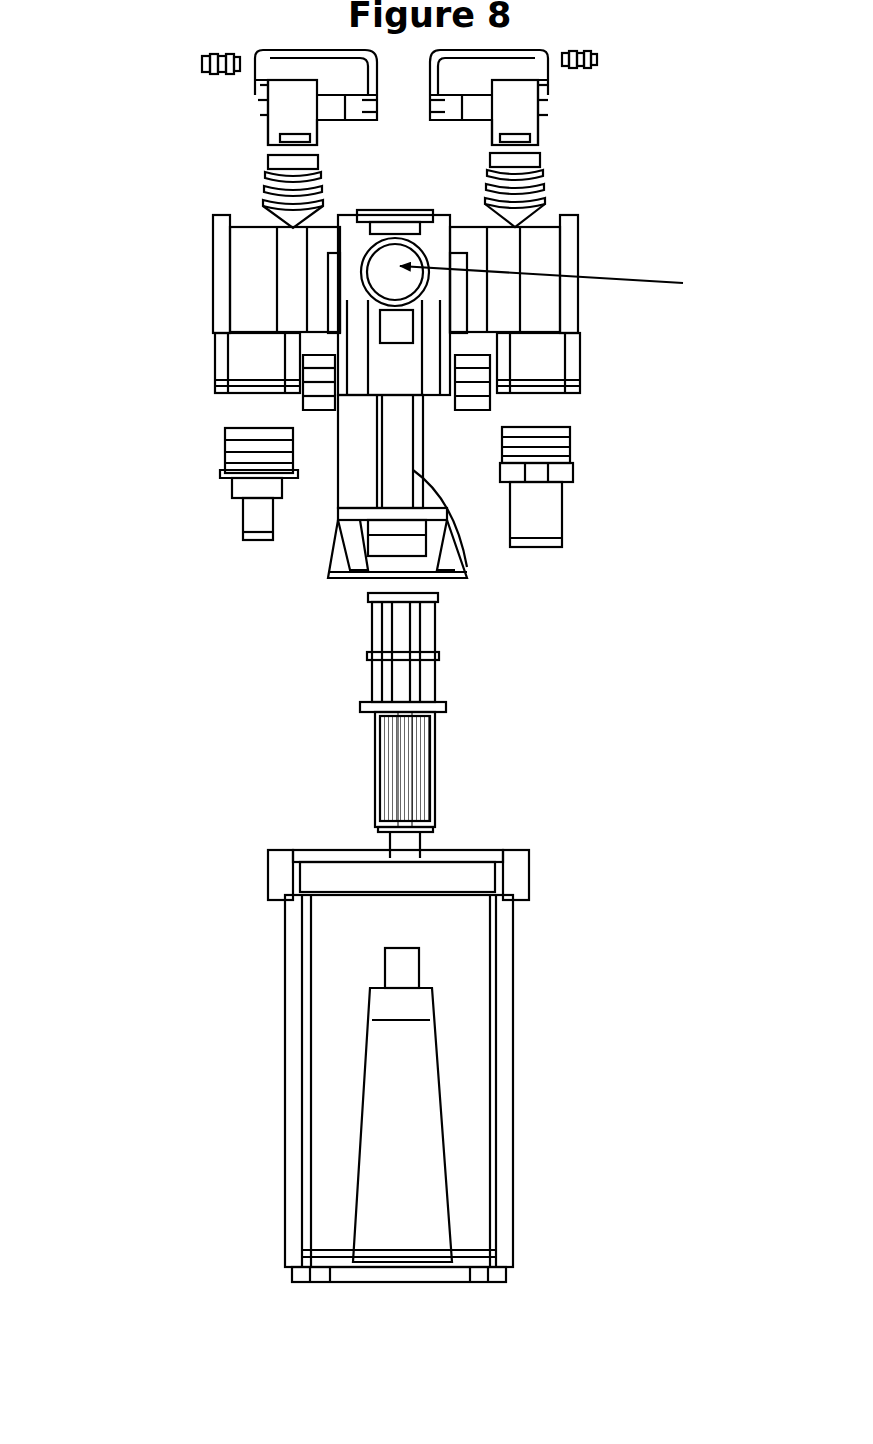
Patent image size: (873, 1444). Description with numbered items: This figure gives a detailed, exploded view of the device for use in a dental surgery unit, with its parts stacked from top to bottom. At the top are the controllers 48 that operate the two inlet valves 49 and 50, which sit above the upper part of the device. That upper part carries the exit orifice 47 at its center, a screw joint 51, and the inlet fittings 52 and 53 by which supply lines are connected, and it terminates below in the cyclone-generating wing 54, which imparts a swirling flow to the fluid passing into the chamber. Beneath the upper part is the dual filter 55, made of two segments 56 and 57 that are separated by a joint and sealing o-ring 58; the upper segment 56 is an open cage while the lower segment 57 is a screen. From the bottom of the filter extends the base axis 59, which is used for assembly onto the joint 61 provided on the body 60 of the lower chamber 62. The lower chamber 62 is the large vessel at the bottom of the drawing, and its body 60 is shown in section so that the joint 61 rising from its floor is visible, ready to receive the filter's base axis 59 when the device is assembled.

The exit orifice 47 is at (262, 265).
The controllers 48 is at (192, 62).
The inlet valve 49 is at (250, 107).
The inlet valve 50 is at (265, 185).
The screw joint 51 is at (222, 432).
The inlet fitting 52 is at (220, 483).
The inlet fitting 53 is at (577, 485).
The cyclone-generating wing 54 is at (455, 560).
The dual filter 55 is at (322, 692).
The filter segment 56 is at (448, 650).
The filter segment 57 is at (448, 767).
The joint and sealing o-ring 58 is at (448, 707).
The base axis 59 is at (428, 846).
The body 60 is at (262, 1053).
The joint 61 is at (410, 947).
The lower chamber 62 is at (468, 1185).